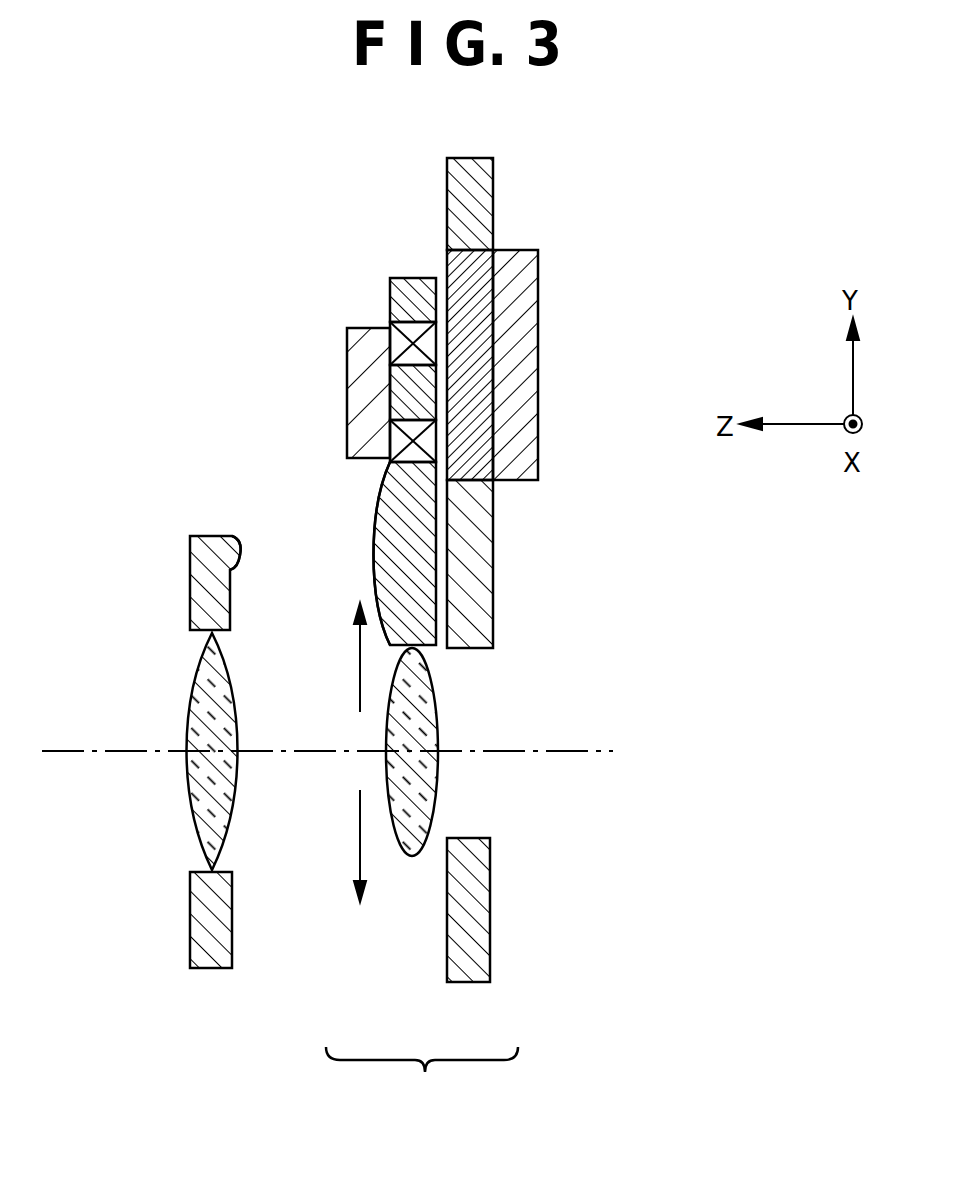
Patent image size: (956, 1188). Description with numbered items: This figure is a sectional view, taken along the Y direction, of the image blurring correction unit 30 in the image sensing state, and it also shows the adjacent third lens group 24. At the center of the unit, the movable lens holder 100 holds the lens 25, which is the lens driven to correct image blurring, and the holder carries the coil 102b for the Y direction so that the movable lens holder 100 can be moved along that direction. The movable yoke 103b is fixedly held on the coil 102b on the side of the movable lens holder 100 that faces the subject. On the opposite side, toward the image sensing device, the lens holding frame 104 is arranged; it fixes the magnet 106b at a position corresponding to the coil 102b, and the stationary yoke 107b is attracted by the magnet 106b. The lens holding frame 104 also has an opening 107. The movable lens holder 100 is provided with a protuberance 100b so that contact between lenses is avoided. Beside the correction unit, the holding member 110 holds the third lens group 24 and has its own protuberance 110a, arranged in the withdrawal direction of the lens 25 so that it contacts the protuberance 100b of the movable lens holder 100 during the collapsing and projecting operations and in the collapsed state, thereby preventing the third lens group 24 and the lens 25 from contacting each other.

The third lens group 24 is at (190, 792).
The lens 25 is at (437, 787).
The image blurring correction unit 30 is at (422, 1081).
The movable lens holder 100 is at (383, 499).
The protuberance 100b is at (378, 590).
The coil 102b is at (386, 323).
The movable yoke 103b is at (347, 353).
The lens holding frame 104 is at (495, 170).
The magnet 106b is at (495, 435).
The opening 107 is at (505, 695).
The stationary yoke 107b is at (530, 297).
The holding member 110 is at (190, 612).
The protuberance 110a is at (238, 546).